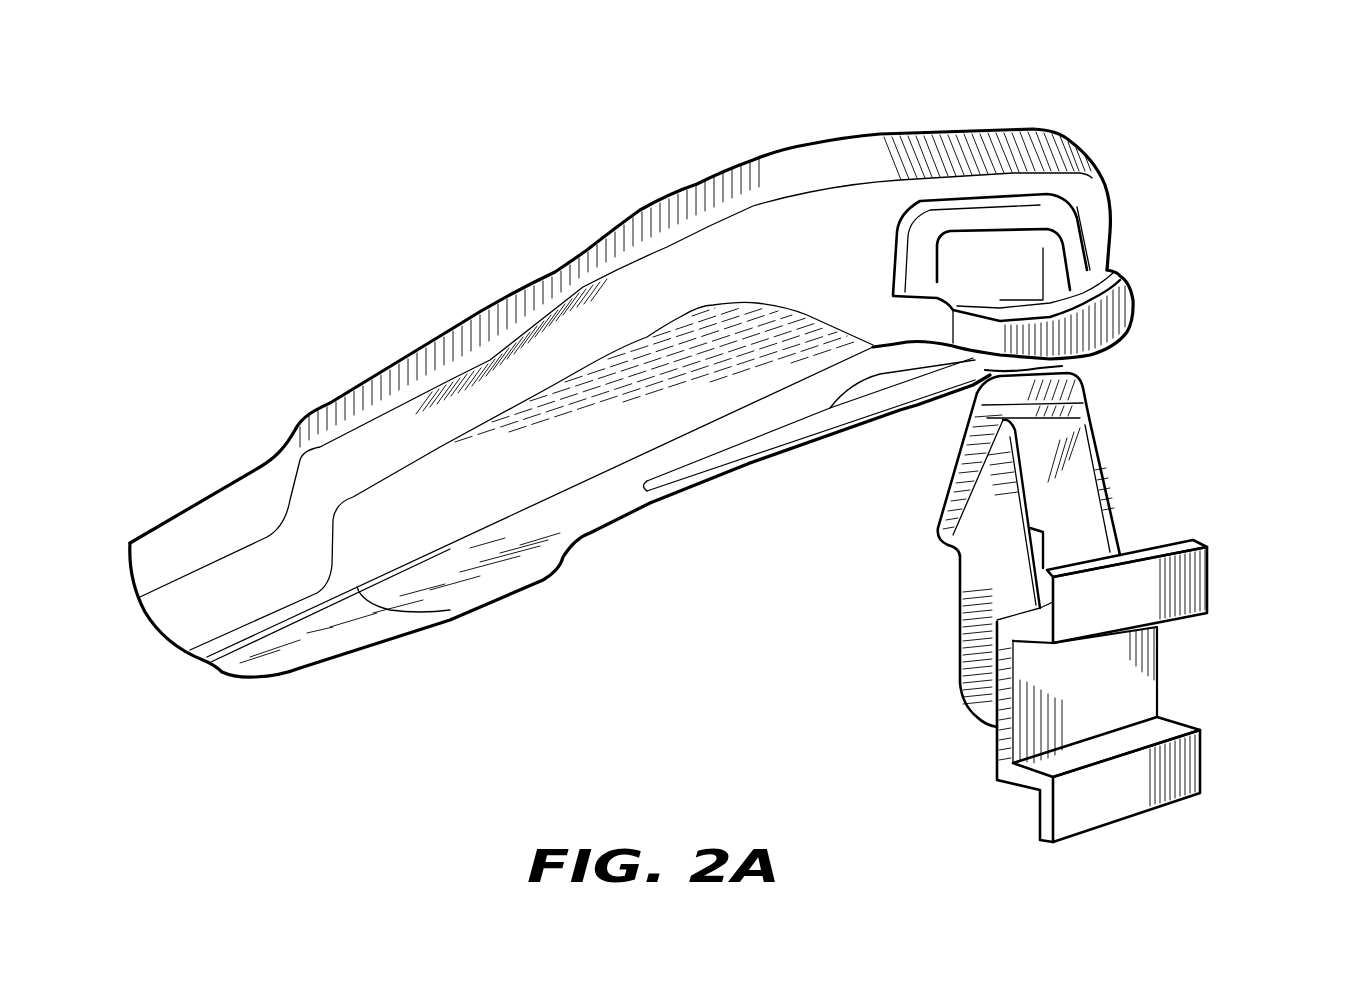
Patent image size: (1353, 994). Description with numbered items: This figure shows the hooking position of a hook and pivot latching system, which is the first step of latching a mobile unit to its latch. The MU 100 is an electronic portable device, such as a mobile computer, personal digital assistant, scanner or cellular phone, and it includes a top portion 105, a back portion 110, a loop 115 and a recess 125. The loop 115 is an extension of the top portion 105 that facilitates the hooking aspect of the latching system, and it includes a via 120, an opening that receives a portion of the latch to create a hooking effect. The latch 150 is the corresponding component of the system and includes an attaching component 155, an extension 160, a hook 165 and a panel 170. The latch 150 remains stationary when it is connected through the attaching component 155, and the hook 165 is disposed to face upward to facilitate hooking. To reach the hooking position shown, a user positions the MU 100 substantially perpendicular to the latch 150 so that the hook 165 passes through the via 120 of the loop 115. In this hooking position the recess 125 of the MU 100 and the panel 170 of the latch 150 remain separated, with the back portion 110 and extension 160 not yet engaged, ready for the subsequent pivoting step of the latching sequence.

The MU 100 is at (462, 322).
The top portion 105 is at (943, 148).
The back portion 110 is at (437, 623).
The loop 115 is at (1130, 326).
The via 120 is at (1127, 277).
The recess 125 is at (743, 453).
The latch 150 is at (1236, 548).
The attaching component 155 is at (1160, 677).
The extension 160 is at (977, 673).
The hook 165 is at (1083, 398).
The panel 170 is at (960, 480).